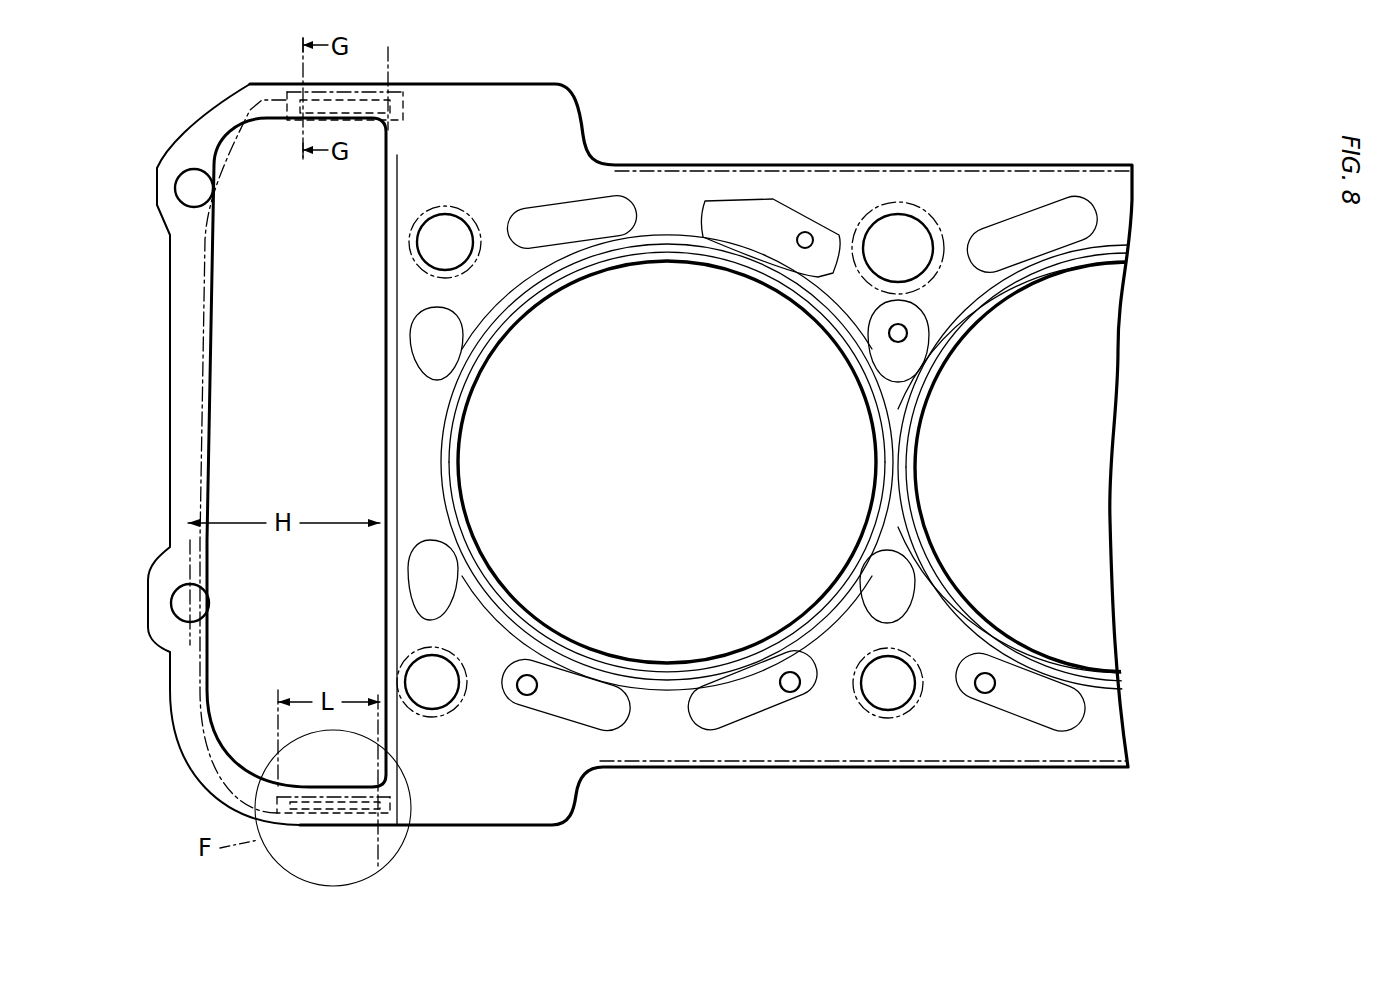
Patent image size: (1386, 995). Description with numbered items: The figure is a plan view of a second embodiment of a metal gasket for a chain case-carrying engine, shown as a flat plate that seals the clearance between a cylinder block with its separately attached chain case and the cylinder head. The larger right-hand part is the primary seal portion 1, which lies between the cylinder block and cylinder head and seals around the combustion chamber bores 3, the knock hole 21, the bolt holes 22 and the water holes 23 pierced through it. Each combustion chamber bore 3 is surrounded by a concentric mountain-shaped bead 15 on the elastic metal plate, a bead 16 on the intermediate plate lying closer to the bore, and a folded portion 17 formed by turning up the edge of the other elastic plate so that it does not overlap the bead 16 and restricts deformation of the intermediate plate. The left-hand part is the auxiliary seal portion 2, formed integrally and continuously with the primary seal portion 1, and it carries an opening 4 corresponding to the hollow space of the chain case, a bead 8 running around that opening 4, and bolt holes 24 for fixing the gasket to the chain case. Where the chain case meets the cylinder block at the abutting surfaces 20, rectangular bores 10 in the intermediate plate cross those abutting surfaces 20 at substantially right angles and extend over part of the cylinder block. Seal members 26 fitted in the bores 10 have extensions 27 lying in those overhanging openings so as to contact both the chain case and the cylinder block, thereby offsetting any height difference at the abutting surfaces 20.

The primary seal portion 1 is at (815, 198).
The auxiliary seal portion 2 is at (345, 92).
The combustion chamber bore 3 is at (827, 330).
The opening 4 is at (386, 295).
The bead 8 is at (222, 130).
The rectangular bore 10 is at (322, 120).
The bead 15 is at (720, 255).
The bead 16 is at (795, 625).
The folded portion 17 is at (866, 408).
The abutting surface 20 is at (387, 125).
The knock hole 21 is at (905, 230).
The bolt hole 22 is at (446, 243).
The coolant hole 23 is at (605, 210).
The bolt hole 24 is at (192, 188).
The seal member 26 is at (300, 92).
The extension 27 is at (392, 806).